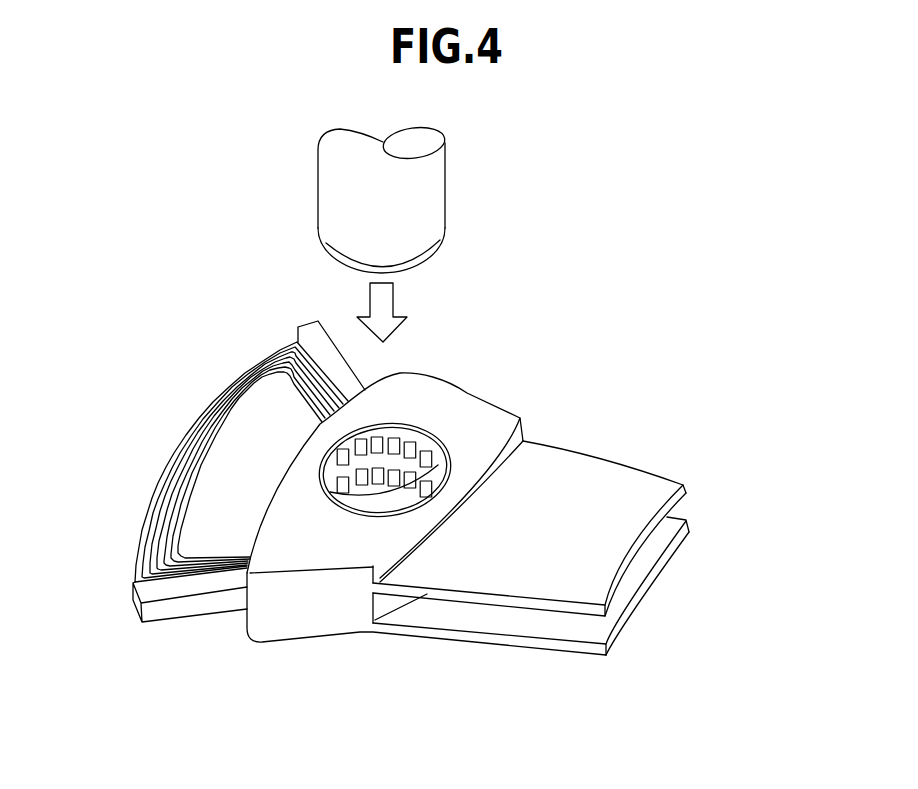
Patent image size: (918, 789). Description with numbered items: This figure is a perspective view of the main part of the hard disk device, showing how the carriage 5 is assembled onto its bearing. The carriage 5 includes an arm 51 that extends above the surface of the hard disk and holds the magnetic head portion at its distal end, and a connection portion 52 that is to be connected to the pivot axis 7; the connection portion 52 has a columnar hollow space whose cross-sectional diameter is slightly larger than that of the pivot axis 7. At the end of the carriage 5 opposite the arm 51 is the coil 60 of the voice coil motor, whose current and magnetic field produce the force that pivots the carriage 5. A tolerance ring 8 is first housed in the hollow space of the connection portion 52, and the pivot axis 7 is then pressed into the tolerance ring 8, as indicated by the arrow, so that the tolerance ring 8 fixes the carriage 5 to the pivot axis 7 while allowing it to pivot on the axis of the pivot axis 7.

The pivot axis 7 is at (448, 189).
The coil 60 is at (168, 508).
The carriage 5 is at (288, 618).
The tolerance ring 8 is at (447, 456).
The connection portion 52 is at (449, 452).
The arm 51 is at (683, 484).